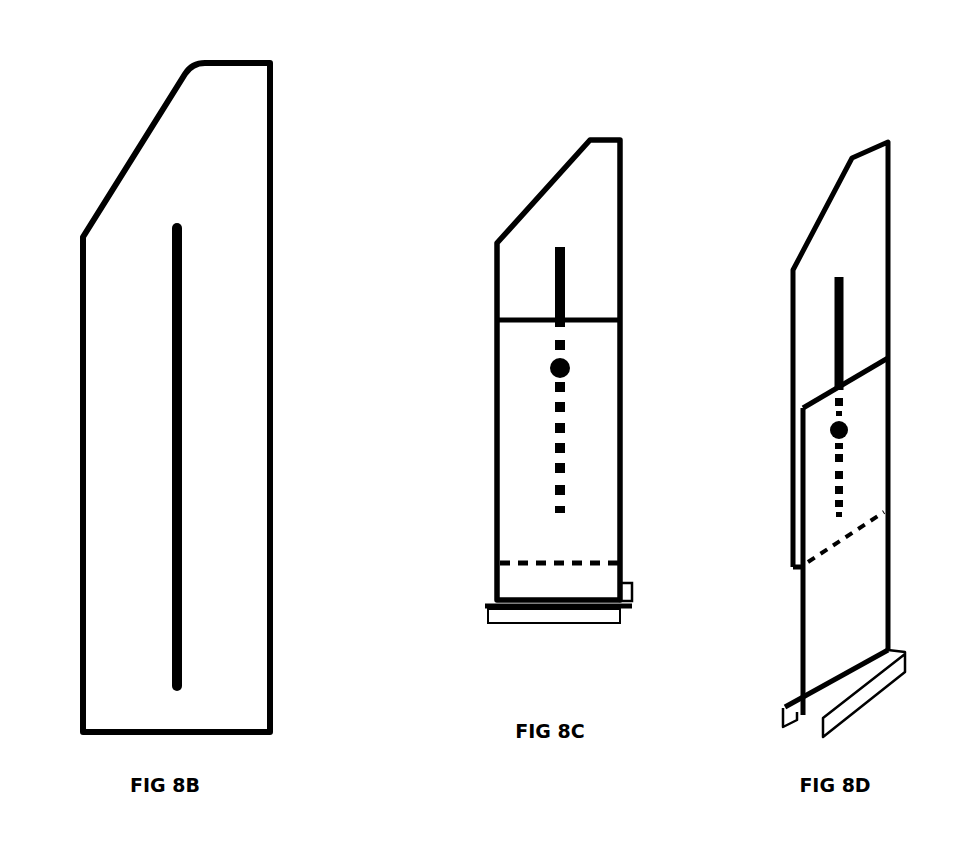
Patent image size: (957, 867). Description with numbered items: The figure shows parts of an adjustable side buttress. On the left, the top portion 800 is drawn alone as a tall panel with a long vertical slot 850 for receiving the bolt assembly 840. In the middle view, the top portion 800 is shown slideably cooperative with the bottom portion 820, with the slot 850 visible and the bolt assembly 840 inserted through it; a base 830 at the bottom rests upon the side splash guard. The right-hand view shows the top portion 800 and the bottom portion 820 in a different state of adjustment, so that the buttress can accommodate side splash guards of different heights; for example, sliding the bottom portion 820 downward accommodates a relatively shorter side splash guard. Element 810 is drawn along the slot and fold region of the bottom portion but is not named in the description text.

In FIG. 8B, the top portion 800 is at (272, 193).
In FIG. 8C, the top portion 800 is at (622, 183).
In FIG. 8B, the slot 850 is at (183, 397).
In FIG. 8C, the slot / fold line 810 is at (565, 288).
In FIG. 8C, the bolt assembly 840 is at (572, 368).
In FIG. 8C, the bottom portion 820 is at (530, 534).
In FIG. 8C, the base 830 is at (567, 624).